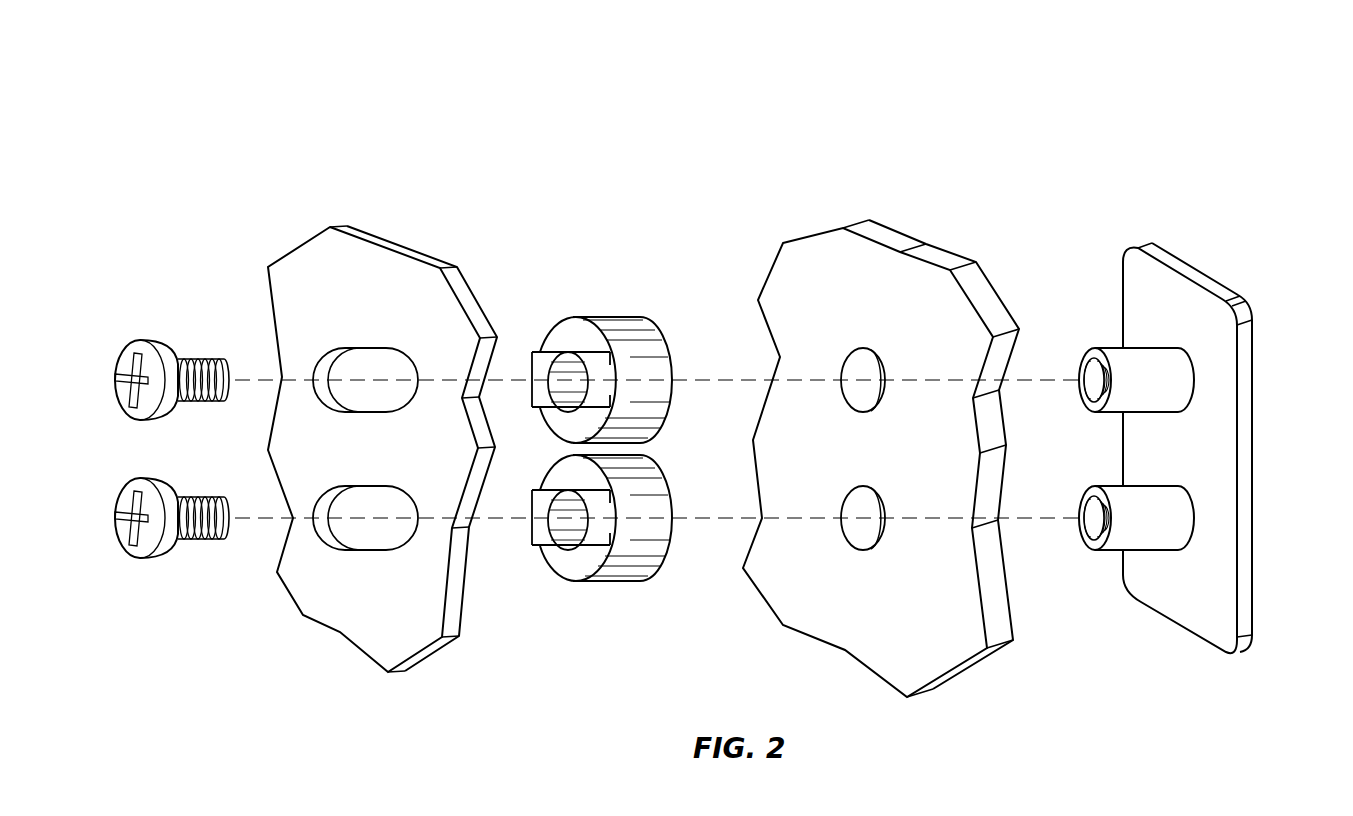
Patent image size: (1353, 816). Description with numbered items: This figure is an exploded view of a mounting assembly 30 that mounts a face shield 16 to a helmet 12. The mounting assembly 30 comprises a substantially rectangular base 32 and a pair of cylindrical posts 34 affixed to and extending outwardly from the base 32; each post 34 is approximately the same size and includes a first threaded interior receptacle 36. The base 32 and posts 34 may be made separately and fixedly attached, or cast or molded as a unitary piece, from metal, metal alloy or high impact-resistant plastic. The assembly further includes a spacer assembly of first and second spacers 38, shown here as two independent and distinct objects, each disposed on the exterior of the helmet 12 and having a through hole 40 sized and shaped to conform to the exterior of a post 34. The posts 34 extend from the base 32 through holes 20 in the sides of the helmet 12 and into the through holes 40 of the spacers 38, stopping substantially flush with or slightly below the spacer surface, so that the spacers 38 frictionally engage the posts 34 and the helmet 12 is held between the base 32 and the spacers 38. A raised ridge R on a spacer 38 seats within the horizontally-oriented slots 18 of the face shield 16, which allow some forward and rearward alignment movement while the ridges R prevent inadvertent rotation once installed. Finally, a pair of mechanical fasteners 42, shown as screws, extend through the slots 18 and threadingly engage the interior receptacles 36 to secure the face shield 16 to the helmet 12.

The mounting assembly 30 is at (940, 122).
The face shield 16 is at (300, 272).
The slots 18 is at (342, 502).
The mechanical fasteners 42 is at (113, 517).
The spacers 38 is at (658, 518).
The through hole 40 is at (570, 503).
The raised ridge R is at (600, 520).
The helmet 12 is at (806, 285).
The holes 20 is at (855, 505).
The base 32 is at (1252, 333).
The cylindrical posts 34 is at (1152, 510).
The threaded interior receptacle 36 is at (1087, 507).